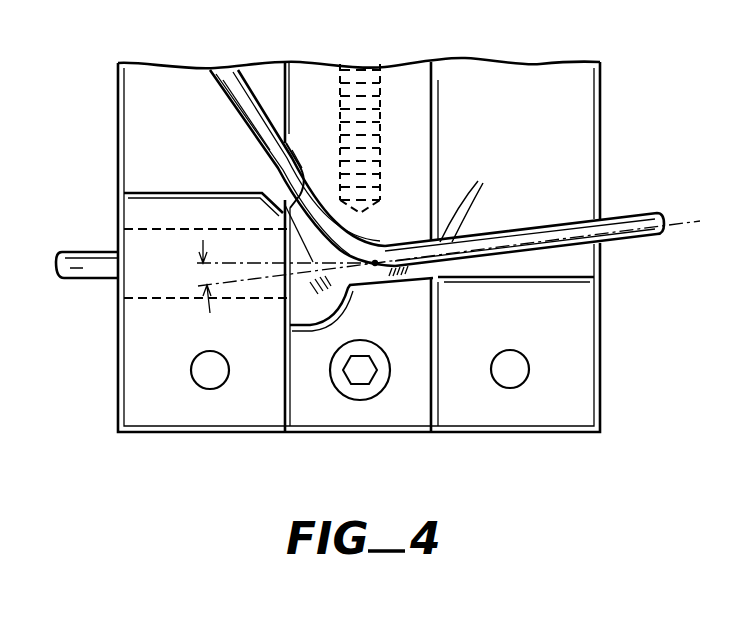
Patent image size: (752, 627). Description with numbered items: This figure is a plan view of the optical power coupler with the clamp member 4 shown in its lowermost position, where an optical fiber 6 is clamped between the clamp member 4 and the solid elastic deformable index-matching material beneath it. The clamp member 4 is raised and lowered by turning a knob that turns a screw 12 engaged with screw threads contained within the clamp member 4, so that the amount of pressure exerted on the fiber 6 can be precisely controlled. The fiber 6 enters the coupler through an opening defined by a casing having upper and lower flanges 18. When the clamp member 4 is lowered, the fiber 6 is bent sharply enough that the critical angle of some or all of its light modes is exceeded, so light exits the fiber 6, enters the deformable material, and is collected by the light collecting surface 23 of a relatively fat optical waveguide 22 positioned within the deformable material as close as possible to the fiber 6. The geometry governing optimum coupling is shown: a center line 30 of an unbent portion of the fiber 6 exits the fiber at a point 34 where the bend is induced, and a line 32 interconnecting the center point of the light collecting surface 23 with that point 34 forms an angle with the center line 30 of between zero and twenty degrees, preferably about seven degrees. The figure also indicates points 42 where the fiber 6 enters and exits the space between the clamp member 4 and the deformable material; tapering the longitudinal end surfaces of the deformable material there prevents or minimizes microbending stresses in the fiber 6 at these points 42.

The clamp member 4 is at (402, 100).
The optical fiber 6 is at (613, 246).
The screw 12 is at (347, 66).
The upper and lower flanges 18 is at (145, 402).
The optical waveguide 22 is at (93, 266).
The light collecting surface 23 is at (330, 243).
The center line 30 is at (672, 220).
The line 32 is at (253, 263).
The point 34 is at (375, 266).
The points 42 is at (290, 153).